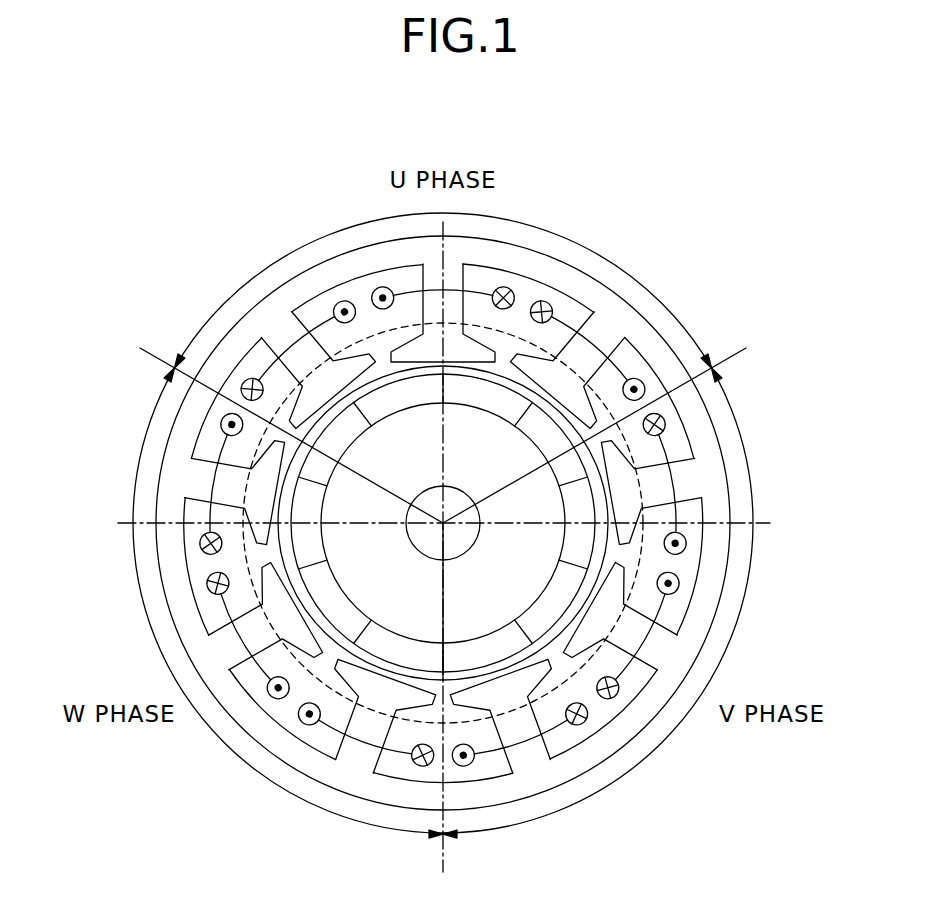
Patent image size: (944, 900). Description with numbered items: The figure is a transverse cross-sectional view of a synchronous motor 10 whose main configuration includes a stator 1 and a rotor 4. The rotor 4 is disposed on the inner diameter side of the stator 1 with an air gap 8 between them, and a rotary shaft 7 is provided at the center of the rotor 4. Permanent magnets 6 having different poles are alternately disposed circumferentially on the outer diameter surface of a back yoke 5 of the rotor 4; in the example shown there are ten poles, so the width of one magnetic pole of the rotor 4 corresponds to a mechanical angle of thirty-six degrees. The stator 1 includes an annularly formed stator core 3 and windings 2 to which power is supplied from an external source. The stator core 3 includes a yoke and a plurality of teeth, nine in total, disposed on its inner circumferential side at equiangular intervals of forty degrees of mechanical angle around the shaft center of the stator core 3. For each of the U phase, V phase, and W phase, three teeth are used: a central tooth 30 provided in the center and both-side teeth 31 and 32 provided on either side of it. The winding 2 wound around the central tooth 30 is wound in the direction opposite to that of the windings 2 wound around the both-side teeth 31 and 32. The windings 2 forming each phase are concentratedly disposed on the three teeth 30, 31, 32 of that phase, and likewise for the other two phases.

The synchronous motor 10 is at (606, 201).
The stator 1 is at (454, 512).
The windings 2 is at (454, 512).
The stator core 3 is at (580, 287).
The rotor 4 is at (563, 523).
The back yoke 5 is at (567, 482).
The permanent magnets 6 is at (585, 440).
The rotary shaft 7 is at (528, 492).
The air gap 8 is at (590, 590).
The central tooth 30 is at (435, 272).
The both-side tooth 31 is at (610, 338).
The both-side tooth 32 is at (283, 333).